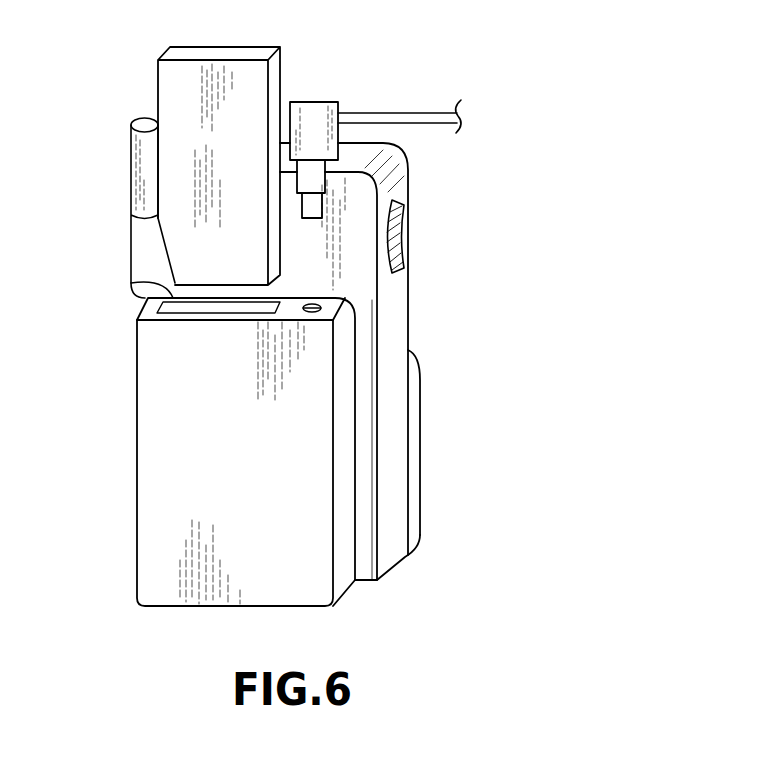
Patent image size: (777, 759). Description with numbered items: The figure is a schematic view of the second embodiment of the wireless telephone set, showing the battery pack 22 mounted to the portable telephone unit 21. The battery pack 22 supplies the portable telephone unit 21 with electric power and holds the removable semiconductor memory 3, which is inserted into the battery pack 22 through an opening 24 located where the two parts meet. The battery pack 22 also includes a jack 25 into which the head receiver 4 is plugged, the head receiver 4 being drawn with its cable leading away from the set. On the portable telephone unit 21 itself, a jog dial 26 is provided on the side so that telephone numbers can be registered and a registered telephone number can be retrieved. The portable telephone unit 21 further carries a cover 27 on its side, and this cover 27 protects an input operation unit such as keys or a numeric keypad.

The semiconductor memory 3 is at (217, 52).
The head receiver 4 is at (313, 100).
The portable telephone unit 21 is at (398, 178).
The battery pack 22 is at (137, 376).
The opening 24 is at (133, 282).
The jack 25 is at (313, 304).
The jog dial 26 is at (406, 226).
The cover 27 is at (418, 416).